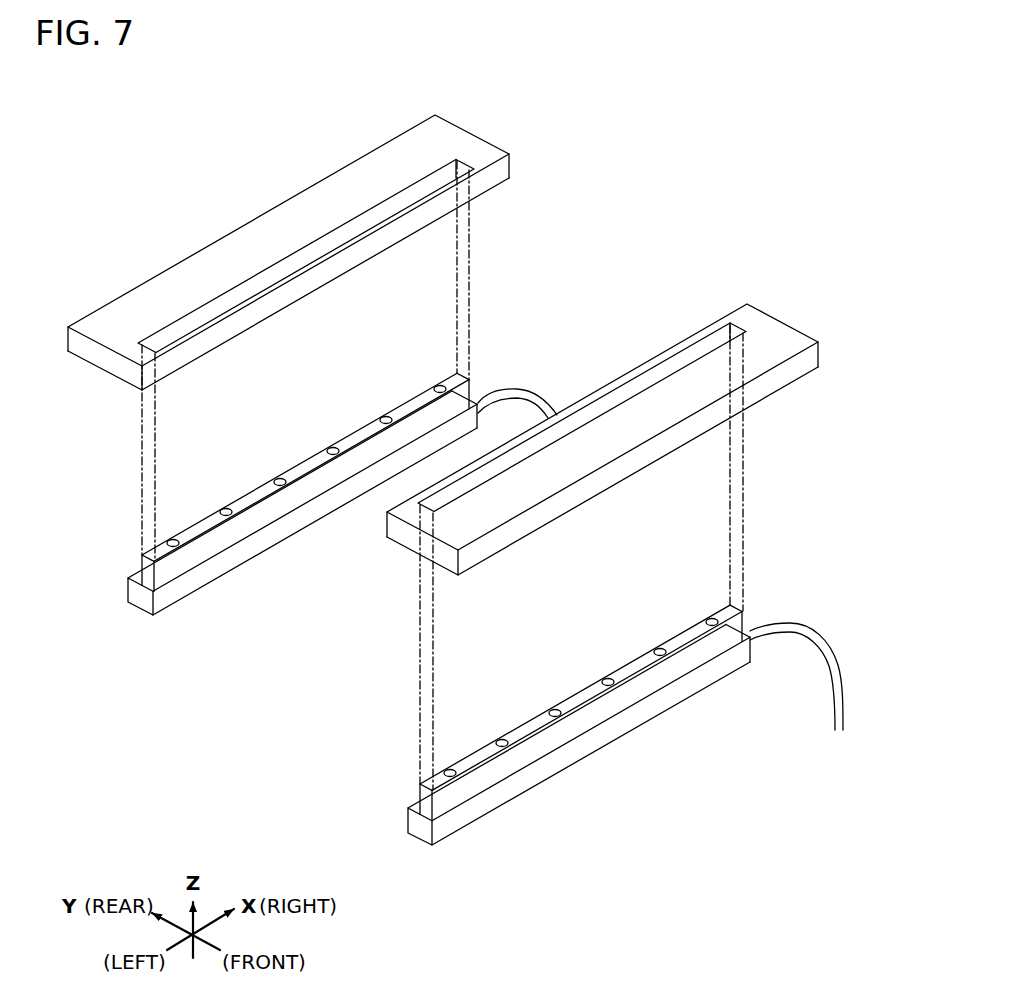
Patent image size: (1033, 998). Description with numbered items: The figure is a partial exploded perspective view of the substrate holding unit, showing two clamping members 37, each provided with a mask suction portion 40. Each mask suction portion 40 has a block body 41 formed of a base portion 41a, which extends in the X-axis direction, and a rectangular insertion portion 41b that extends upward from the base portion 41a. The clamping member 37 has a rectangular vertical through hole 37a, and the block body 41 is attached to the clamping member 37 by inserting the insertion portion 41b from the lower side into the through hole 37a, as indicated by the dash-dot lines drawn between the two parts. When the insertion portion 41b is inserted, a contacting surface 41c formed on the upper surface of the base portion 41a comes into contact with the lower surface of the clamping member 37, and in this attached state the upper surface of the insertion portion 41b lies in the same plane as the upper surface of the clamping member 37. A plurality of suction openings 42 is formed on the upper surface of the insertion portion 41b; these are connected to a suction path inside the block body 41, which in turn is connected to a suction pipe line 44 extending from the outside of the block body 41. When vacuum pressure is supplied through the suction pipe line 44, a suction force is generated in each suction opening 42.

The clamping member 37 is at (449, 136).
The rectangular vertical through hole 37a is at (338, 234).
The mask suction portion 40 is at (431, 615).
The block body 41 is at (403, 615).
The base portion 41a is at (261, 549).
The insertion portion 41b is at (305, 466).
The contacting surface 41c is at (133, 572).
The suction openings 42 is at (175, 536).
The suction pipe line 44 is at (540, 395).